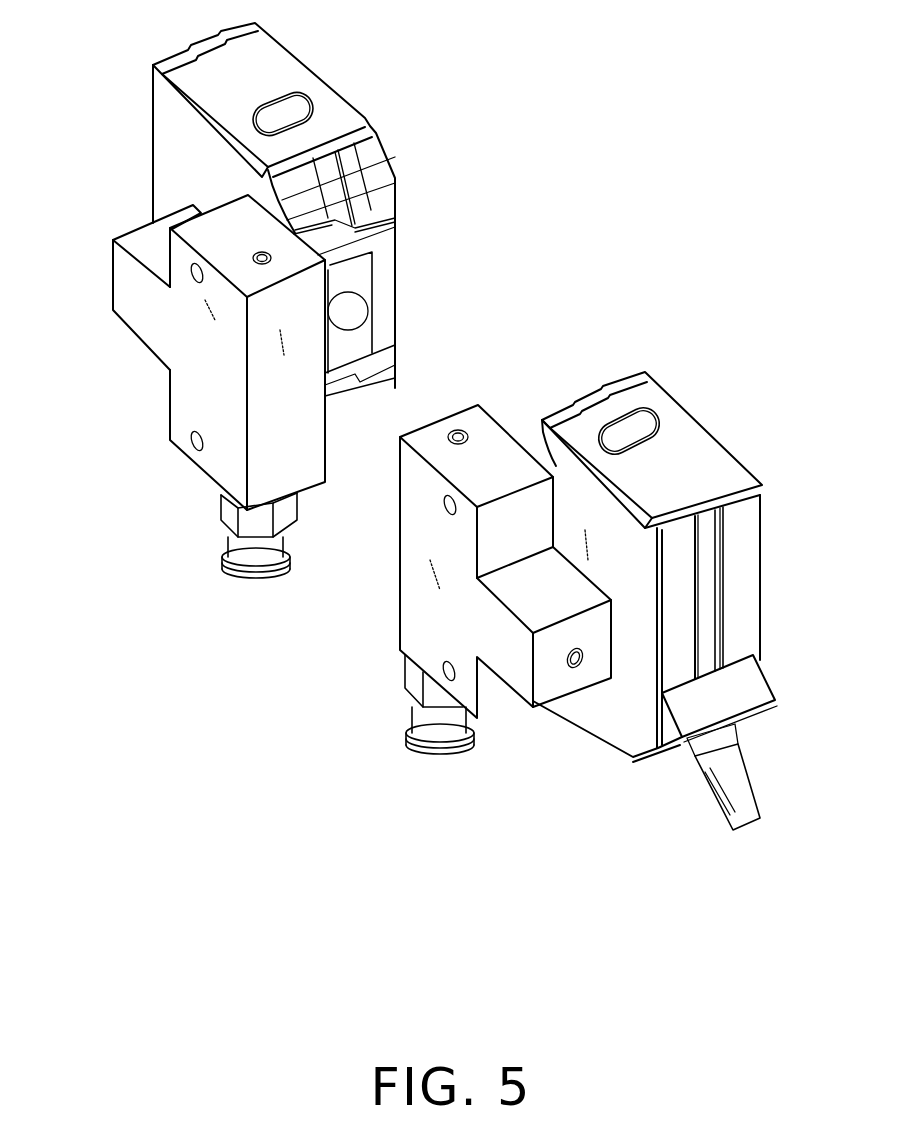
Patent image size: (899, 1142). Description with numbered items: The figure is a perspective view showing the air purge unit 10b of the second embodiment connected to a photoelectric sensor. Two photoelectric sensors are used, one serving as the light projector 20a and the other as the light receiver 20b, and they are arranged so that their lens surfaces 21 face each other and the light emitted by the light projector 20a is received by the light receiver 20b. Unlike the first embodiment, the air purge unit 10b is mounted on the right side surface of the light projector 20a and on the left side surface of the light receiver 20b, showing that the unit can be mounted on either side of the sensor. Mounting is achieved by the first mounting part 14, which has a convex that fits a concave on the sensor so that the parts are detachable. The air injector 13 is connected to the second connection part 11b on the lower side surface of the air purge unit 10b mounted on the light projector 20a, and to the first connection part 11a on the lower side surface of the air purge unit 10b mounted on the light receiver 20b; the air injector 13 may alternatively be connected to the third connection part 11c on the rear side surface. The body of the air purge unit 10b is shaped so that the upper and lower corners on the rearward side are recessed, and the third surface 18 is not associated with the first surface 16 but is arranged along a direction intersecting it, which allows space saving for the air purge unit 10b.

The air purge unit 10b is at (318, 503).
The first connection part 11a is at (268, 252).
The second connection part 11b is at (460, 430).
The third connection part 11c is at (573, 672).
The air injector 13 is at (248, 548).
The first mounting part 14 is at (188, 268).
The first surface 16 is at (258, 230).
The third surface 18 is at (190, 353).
The light projector 20a is at (180, 157).
The light receiver 20b is at (752, 575).
The lens surface 21 is at (347, 313).